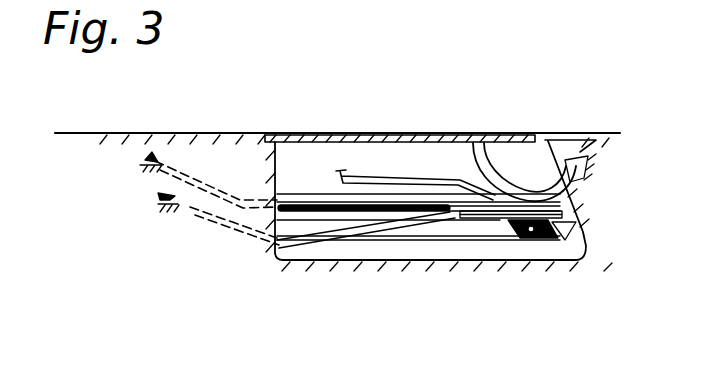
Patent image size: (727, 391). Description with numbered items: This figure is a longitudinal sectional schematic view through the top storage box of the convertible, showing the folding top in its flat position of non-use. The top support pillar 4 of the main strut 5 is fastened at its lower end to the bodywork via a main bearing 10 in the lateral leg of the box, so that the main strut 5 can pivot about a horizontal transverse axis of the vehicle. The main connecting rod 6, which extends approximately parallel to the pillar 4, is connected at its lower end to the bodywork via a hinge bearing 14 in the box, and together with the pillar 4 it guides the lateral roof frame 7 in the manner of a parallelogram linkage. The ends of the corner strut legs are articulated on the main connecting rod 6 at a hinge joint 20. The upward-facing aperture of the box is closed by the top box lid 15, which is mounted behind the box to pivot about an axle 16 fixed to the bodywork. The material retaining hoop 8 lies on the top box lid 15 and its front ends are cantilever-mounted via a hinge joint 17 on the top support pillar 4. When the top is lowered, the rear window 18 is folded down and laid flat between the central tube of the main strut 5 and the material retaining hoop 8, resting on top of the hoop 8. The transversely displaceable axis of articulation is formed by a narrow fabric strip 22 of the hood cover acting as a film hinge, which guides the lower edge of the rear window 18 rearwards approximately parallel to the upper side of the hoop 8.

The top support pillar 4 is at (197, 207).
The main strut 5 is at (513, 185).
The main connecting rod 6 is at (177, 165).
The lateral roof frame 7 is at (375, 173).
The material retaining hoop 8 is at (527, 232).
The main bearing 10 is at (150, 198).
The hinge bearing 14 is at (143, 148).
The top box lid 15 is at (438, 133).
The axle 16 is at (568, 170).
The hinge joint 17 is at (259, 195).
The rear window 18 is at (483, 217).
The hinge joint 20 is at (259, 195).
The fabric strip 22 is at (587, 244).